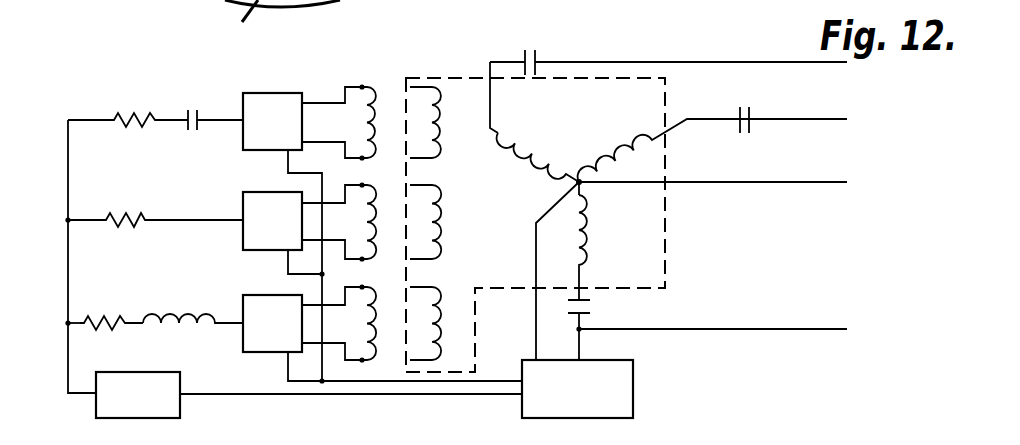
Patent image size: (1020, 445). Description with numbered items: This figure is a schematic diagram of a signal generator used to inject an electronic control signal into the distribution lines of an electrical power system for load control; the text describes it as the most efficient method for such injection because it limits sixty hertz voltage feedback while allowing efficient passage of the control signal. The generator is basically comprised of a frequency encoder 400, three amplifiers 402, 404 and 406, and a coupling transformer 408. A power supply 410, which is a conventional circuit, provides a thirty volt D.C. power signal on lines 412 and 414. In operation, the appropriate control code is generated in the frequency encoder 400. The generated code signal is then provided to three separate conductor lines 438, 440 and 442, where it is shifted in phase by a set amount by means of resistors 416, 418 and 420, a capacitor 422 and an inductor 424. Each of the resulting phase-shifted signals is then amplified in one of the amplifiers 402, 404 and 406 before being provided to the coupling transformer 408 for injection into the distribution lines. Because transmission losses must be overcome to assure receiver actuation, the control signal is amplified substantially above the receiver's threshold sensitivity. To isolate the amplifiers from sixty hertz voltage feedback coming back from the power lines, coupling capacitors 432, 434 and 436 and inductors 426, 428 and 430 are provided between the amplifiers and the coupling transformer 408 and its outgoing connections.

The frequency encoder 400 is at (143, 372).
The amplifier 402 is at (273, 293).
The amplifier 404 is at (268, 191).
The amplifier 406 is at (280, 92).
The coupling transformer 408 is at (470, 74).
The power supply 410 is at (633, 410).
The line 412 is at (335, 396).
The line 414 is at (424, 383).
The resistor 416 is at (110, 318).
The resistor 418 is at (140, 218).
The resistor 420 is at (132, 114).
The capacitor 422 is at (198, 110).
The inductor 424 is at (192, 306).
The inductor 426 is at (365, 122).
The inductor 428 is at (366, 222).
The inductor 430 is at (366, 326).
The coupling capacitor 432 is at (541, 62).
The coupling capacitor 434 is at (750, 112).
The coupling capacitor 436 is at (592, 313).
The conductor line 438 is at (72, 130).
The conductor line 440 is at (78, 218).
The conductor line 442 is at (72, 326).